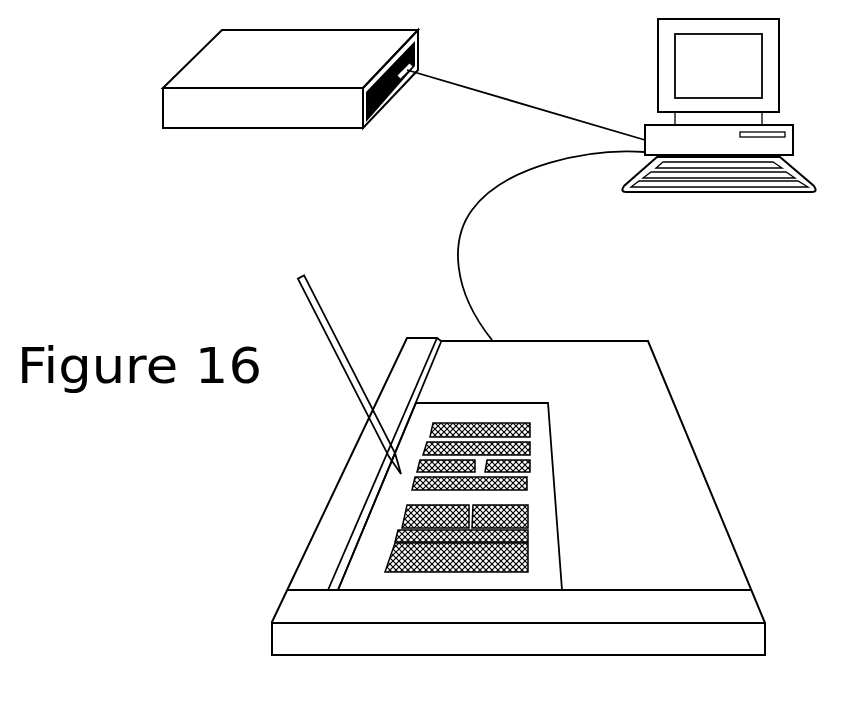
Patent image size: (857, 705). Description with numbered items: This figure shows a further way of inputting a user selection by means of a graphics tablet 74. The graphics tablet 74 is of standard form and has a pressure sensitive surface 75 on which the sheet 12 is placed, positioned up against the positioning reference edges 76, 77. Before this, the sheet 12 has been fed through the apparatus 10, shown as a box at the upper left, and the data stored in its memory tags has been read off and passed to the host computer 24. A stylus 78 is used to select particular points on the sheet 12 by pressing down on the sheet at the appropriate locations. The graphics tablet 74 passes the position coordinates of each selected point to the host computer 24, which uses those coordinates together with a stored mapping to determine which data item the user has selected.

The apparatus 10 is at (212, 113).
The host computer 24 is at (658, 63).
The sheet 12 is at (555, 523).
The graphics tablet 74 is at (530, 469).
The pressure sensitive surface 75 is at (682, 453).
The positioning reference edge 76 is at (425, 368).
The positioning reference edge 77 is at (698, 588).
The stylus 78 is at (303, 277).